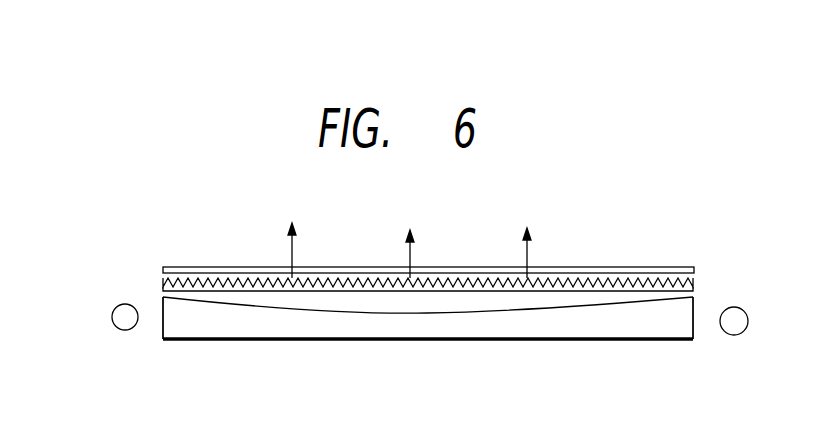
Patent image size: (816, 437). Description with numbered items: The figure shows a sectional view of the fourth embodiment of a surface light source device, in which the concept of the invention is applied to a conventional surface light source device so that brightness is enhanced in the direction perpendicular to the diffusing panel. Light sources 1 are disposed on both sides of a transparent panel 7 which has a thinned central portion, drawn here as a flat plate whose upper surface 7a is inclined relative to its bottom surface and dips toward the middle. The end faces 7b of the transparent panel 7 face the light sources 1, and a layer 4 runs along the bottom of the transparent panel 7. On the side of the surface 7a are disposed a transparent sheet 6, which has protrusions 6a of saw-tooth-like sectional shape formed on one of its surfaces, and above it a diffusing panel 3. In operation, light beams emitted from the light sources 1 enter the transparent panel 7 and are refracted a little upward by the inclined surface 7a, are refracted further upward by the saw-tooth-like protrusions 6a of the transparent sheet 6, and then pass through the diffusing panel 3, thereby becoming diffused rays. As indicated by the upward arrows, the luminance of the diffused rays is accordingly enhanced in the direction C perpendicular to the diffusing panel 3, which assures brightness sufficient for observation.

The light source 1 is at (120, 323).
The diffusing panel 3 is at (665, 272).
The reflector 4 is at (582, 343).
The transparent sheet 6 is at (428, 245).
The protrusions 6a is at (597, 279).
The transparent panel 7 is at (429, 317).
The surface 7a is at (480, 310).
The light incident end faces 7b is at (163, 330).
The direction C is at (409, 238).